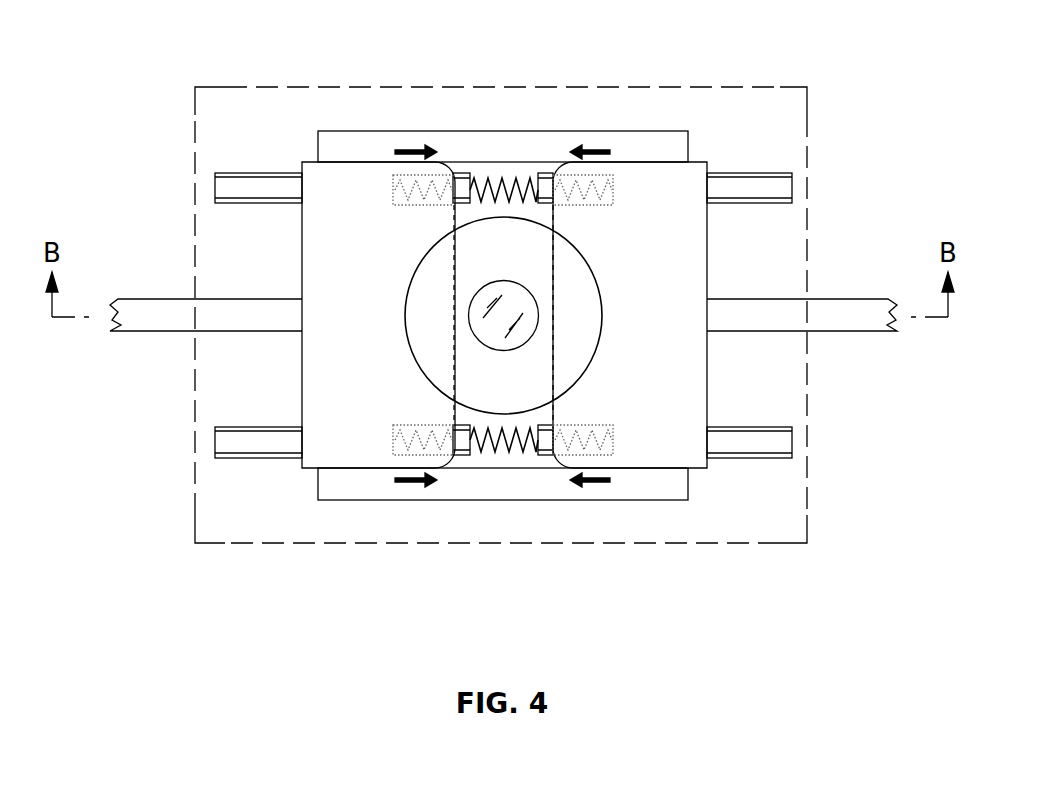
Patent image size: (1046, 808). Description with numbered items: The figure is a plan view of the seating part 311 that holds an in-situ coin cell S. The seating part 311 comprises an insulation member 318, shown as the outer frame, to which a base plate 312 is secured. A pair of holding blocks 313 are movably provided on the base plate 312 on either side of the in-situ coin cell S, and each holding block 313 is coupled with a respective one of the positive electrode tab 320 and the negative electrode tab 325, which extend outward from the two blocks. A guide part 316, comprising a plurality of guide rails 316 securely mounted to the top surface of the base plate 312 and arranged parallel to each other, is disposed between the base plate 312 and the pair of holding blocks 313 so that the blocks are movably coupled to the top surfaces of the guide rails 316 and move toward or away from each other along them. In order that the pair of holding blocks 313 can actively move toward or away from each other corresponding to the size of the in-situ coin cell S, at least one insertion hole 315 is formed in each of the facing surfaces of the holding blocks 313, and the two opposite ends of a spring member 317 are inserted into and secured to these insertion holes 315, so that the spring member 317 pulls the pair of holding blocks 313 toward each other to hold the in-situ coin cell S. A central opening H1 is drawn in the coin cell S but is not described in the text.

The seating part 311 is at (738, 120).
The base plate 312 is at (347, 130).
The holding blocks 313 is at (688, 243).
The insertion hole 315 is at (613, 180).
The guide part 316 is at (765, 187).
The spring member 317 is at (505, 183).
The insulation member 318 is at (807, 518).
The positive electrode tab 320 is at (163, 317).
The negative electrode tab 325 is at (845, 320).
The in-situ coin cell S is at (572, 343).
The hole H1 is at (498, 323).